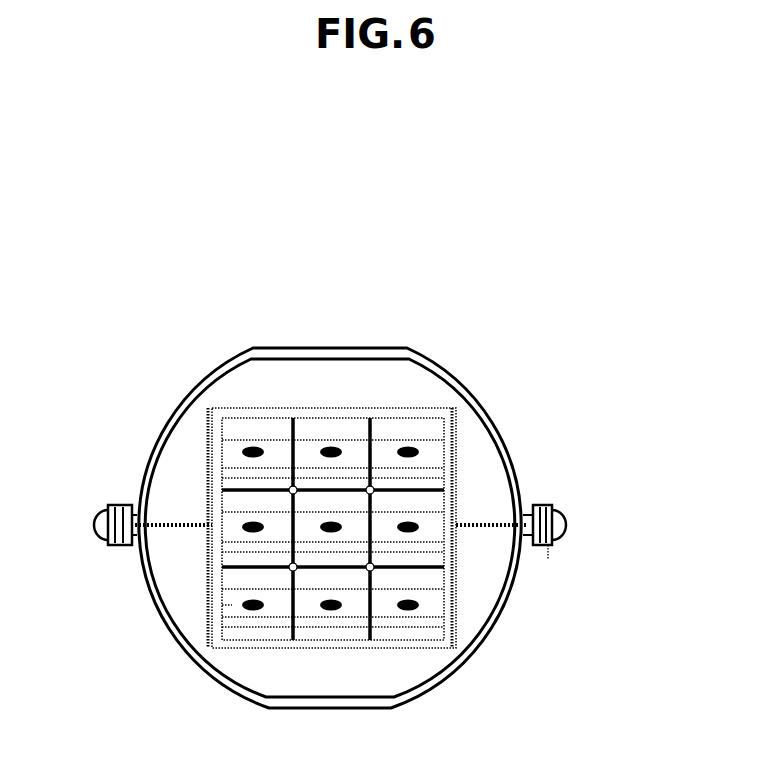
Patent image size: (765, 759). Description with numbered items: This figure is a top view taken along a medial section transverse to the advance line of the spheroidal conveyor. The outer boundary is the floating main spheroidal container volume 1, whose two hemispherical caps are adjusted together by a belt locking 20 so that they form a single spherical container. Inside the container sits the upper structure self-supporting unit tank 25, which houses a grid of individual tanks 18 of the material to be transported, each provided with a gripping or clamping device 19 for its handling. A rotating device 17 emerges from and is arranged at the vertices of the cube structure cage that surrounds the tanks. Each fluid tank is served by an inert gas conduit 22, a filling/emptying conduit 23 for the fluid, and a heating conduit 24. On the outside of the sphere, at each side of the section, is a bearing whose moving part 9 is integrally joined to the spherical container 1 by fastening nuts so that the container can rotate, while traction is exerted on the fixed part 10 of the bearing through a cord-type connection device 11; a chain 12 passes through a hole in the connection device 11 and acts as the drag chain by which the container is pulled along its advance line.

The floating main spheroidal container volume 1 is at (408, 350).
The moving part of the bearing 9 is at (550, 498).
The fixed part of the bearing 10 is at (560, 507).
The cord-type connection device 11 is at (566, 525).
The chain 12 is at (548, 560).
The rotating device 17 is at (453, 404).
The individual tank of the material to be transported 18 is at (250, 583).
The gripping or clamping device 19 is at (230, 608).
The belt locking of the upper hemispherical cap 20 is at (445, 367).
The inert gas conduit 22 is at (507, 433).
The filling/emptying conduit of the tank unit 23 is at (455, 446).
The heating conduit of the tank unit 24 is at (458, 468).
The upper structure self-supporting unit tank 25 is at (333, 408).